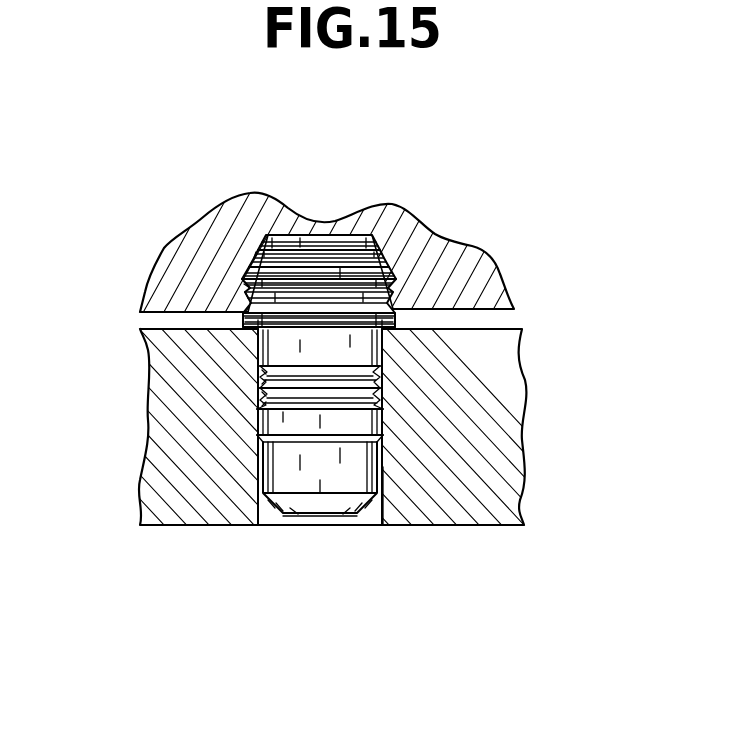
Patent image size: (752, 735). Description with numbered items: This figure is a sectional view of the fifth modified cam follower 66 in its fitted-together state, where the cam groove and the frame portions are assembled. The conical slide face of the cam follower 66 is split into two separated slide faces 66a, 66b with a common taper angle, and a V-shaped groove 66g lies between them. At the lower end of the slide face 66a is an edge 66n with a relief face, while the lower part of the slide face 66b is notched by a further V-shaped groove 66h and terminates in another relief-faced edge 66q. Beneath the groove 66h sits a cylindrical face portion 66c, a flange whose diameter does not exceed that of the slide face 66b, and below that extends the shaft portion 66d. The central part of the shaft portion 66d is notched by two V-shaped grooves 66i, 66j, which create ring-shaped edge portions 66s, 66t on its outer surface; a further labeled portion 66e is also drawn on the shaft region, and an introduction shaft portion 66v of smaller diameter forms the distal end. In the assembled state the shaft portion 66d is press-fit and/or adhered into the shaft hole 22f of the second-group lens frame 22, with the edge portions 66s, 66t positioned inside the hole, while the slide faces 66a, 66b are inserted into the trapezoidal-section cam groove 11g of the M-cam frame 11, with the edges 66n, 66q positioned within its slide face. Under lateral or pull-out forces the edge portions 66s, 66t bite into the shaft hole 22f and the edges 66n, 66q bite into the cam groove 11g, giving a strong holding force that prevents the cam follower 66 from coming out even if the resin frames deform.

The M-cam frame 11 is at (253, 215).
The cam groove 11g is at (398, 282).
The group-2 lens frame 22 is at (515, 505).
The shaft hole 22f is at (377, 496).
The cam follower 66 is at (312, 250).
The slide face 66a is at (388, 279).
The V-shaped groove 66g is at (388, 258).
The slide face 66b is at (392, 268).
The V-shaped groove 66h is at (398, 312).
The edge 66n is at (253, 259).
The edge 66q is at (245, 282).
The cylindrical face portion 66c is at (398, 318).
The shaft portion 66d is at (383, 352).
The edge portion 66s is at (258, 388).
The V-shaped groove 66i is at (383, 375).
The edge portion 66t is at (258, 416).
The V-shaped groove 66j is at (383, 402).
The plug bottom recess 66e is at (383, 425).
The introduction shaft portion 66v is at (382, 463).